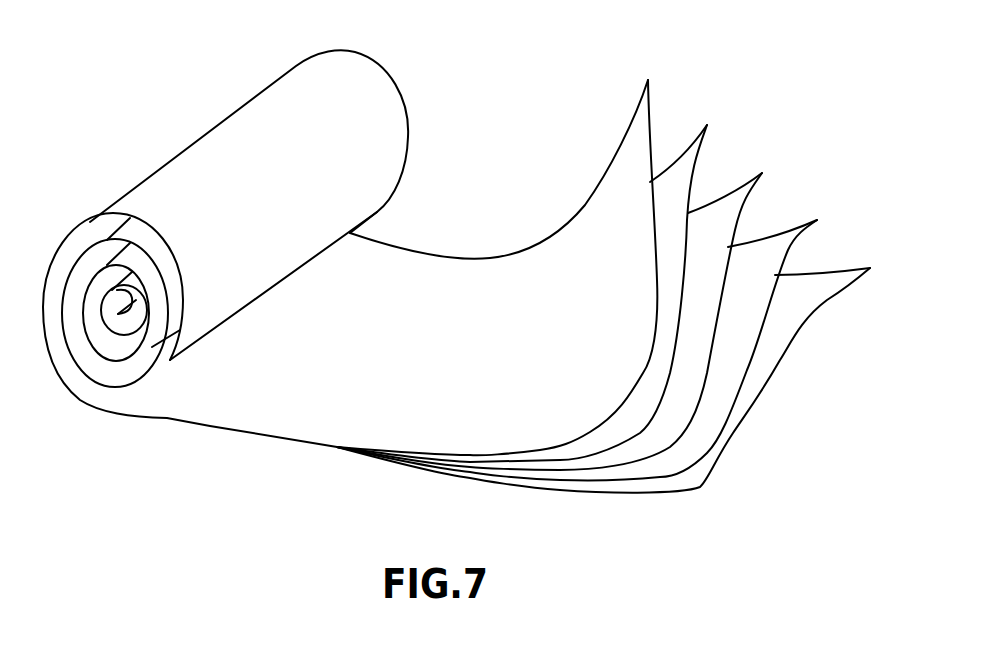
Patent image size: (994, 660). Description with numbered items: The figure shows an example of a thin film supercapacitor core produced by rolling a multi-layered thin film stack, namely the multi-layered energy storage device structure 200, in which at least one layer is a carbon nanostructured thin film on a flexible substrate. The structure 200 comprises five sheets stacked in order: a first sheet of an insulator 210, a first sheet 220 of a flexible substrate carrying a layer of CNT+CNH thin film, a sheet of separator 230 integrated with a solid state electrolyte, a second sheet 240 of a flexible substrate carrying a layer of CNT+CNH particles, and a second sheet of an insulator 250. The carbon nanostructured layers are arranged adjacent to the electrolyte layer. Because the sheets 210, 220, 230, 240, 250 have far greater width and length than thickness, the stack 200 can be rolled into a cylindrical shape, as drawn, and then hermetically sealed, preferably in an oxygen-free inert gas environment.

The multi-layered energy storage device structure 200 is at (233, 44).
The first sheet of an insulator 210 is at (847, 278).
The first sheet of a flexible substrate 220 is at (793, 233).
The sheet of separator 230 is at (740, 195).
The second sheet of a flexible substrate 240 is at (693, 147).
The second sheet of an insulator 250 is at (640, 107).